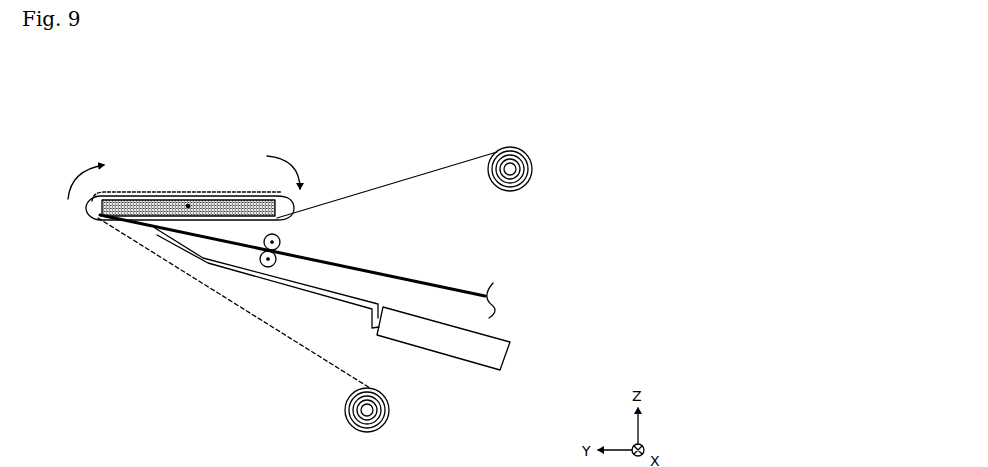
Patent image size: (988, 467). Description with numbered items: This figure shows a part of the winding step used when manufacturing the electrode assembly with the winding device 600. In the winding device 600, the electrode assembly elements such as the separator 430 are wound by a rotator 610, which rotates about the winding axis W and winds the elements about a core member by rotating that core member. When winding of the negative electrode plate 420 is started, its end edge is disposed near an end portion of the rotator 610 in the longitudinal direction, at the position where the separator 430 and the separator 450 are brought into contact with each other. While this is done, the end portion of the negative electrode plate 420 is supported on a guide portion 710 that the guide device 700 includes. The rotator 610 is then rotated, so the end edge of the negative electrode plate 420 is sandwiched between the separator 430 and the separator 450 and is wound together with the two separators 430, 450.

The winding device 600 is at (179, 156).
The rotator 610 is at (143, 196).
The winding axis W is at (189, 205).
The separator 430 is at (398, 178).
The negative electrode plate 420 is at (380, 272).
The guide portion 710 is at (178, 246).
The guide device 700 is at (475, 377).
The separator 450 is at (270, 324).